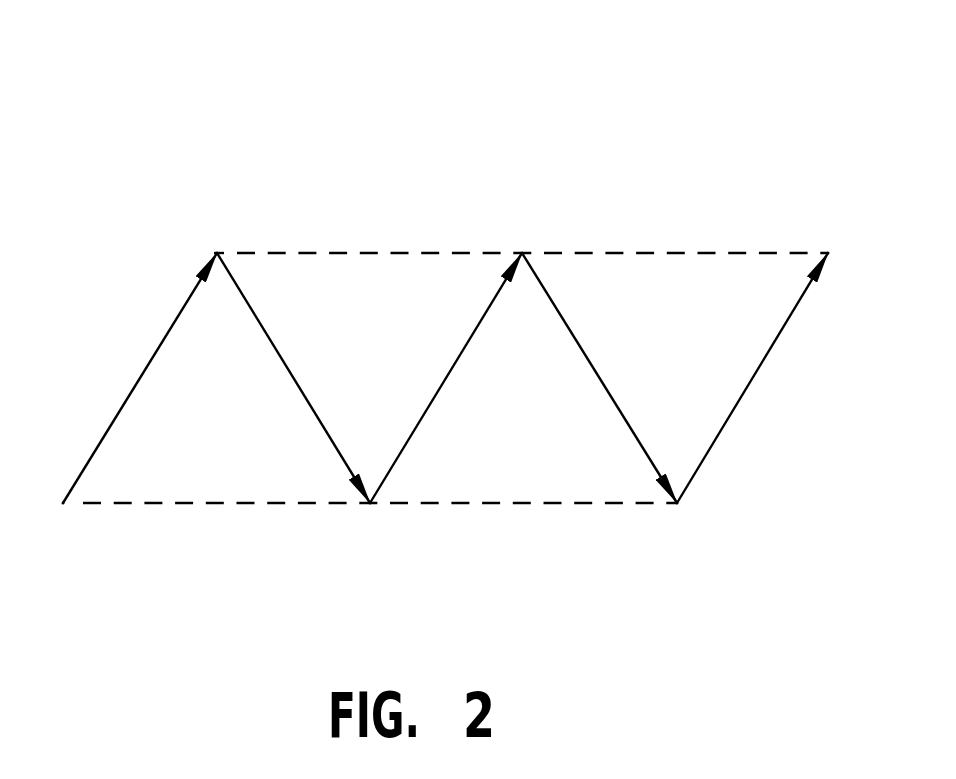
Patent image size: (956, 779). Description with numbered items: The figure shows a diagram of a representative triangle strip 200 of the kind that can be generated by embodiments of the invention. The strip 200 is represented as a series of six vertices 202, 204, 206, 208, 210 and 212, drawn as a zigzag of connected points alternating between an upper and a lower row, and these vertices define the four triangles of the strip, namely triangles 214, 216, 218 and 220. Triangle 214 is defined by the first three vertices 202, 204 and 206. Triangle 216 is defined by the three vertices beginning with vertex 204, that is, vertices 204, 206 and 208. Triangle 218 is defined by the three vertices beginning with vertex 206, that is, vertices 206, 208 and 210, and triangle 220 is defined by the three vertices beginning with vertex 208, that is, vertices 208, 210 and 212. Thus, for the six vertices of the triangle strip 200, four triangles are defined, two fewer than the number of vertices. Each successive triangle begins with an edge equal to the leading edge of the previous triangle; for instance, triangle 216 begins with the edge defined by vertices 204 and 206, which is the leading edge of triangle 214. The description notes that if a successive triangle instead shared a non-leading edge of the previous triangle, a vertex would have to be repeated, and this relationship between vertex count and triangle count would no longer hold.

The triangle strip 200 is at (668, 117).
The vertex 202 is at (63, 503).
The vertex 204 is at (217, 253).
The vertex 206 is at (370, 503).
The vertex 208 is at (522, 253).
The vertex 210 is at (677, 503).
The vertex 212 is at (828, 253).
The triangle 214 is at (242, 437).
The triangle 216 is at (392, 338).
The triangle 218 is at (543, 437).
The triangle 220 is at (692, 338).